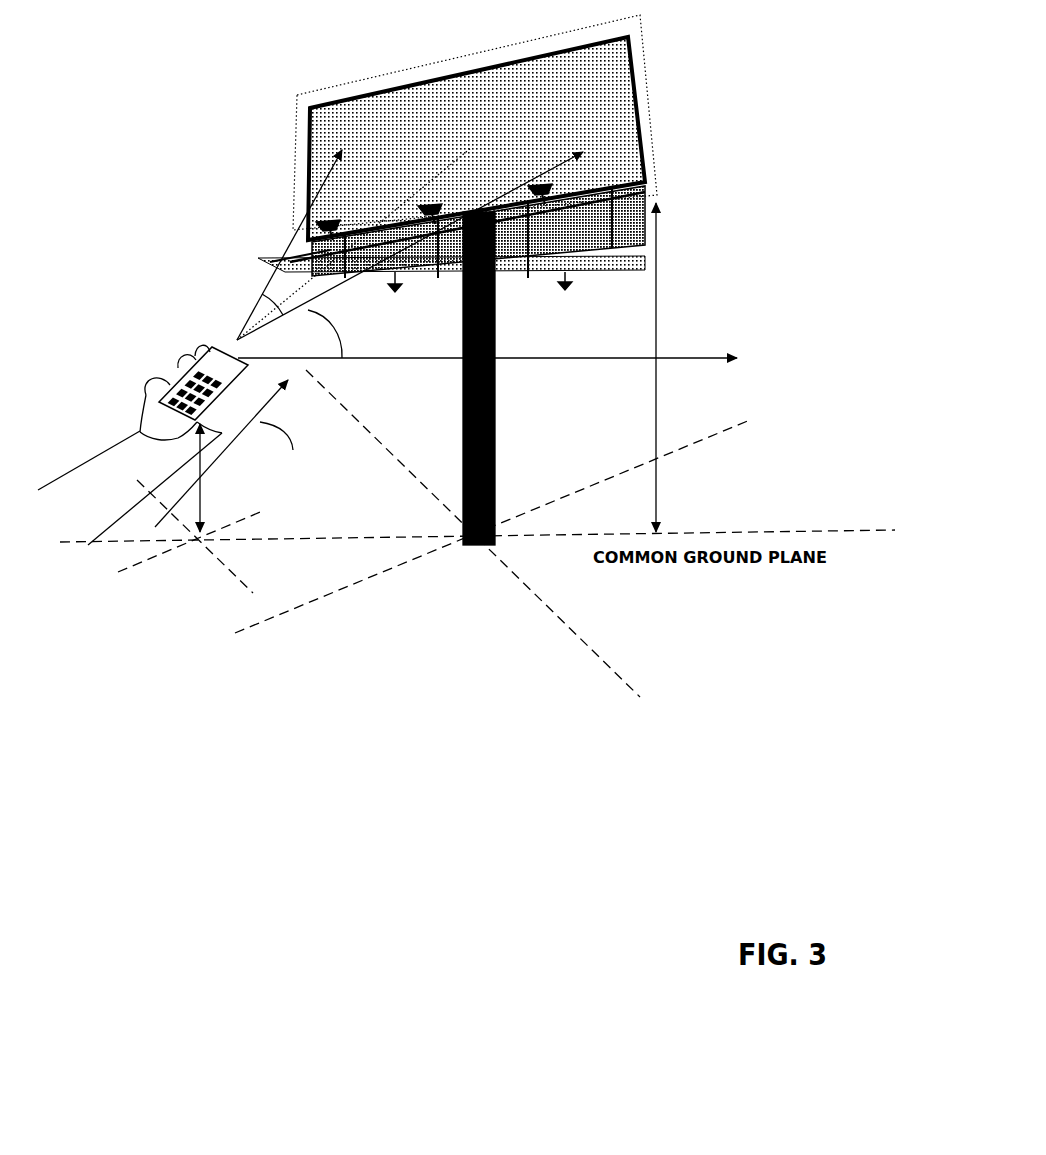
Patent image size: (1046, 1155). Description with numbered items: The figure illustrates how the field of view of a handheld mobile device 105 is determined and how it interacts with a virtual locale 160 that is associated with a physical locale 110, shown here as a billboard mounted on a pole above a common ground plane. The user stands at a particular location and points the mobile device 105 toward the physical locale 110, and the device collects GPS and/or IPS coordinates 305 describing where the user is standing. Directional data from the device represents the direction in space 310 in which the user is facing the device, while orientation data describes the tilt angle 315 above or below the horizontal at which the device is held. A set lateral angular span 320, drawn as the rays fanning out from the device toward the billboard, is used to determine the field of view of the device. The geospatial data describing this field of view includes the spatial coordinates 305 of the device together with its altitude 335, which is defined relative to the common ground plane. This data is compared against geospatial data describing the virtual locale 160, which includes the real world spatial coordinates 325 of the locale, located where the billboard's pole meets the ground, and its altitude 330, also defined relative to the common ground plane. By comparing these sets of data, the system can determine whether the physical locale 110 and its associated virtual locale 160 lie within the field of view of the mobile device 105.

The mobile device 105 is at (173, 374).
The physical locale 110 is at (635, 97).
The virtual locale 160 is at (647, 42).
The coordinates 305 is at (193, 557).
The direction in space 310 is at (233, 453).
The tilt angle 315 is at (487, 334).
The lateral angular span 320 is at (394, 243).
The real world spatial coordinates 325 is at (388, 592).
The altitude of virtual locale 330 is at (680, 367).
The altitude of device 335 is at (223, 478).